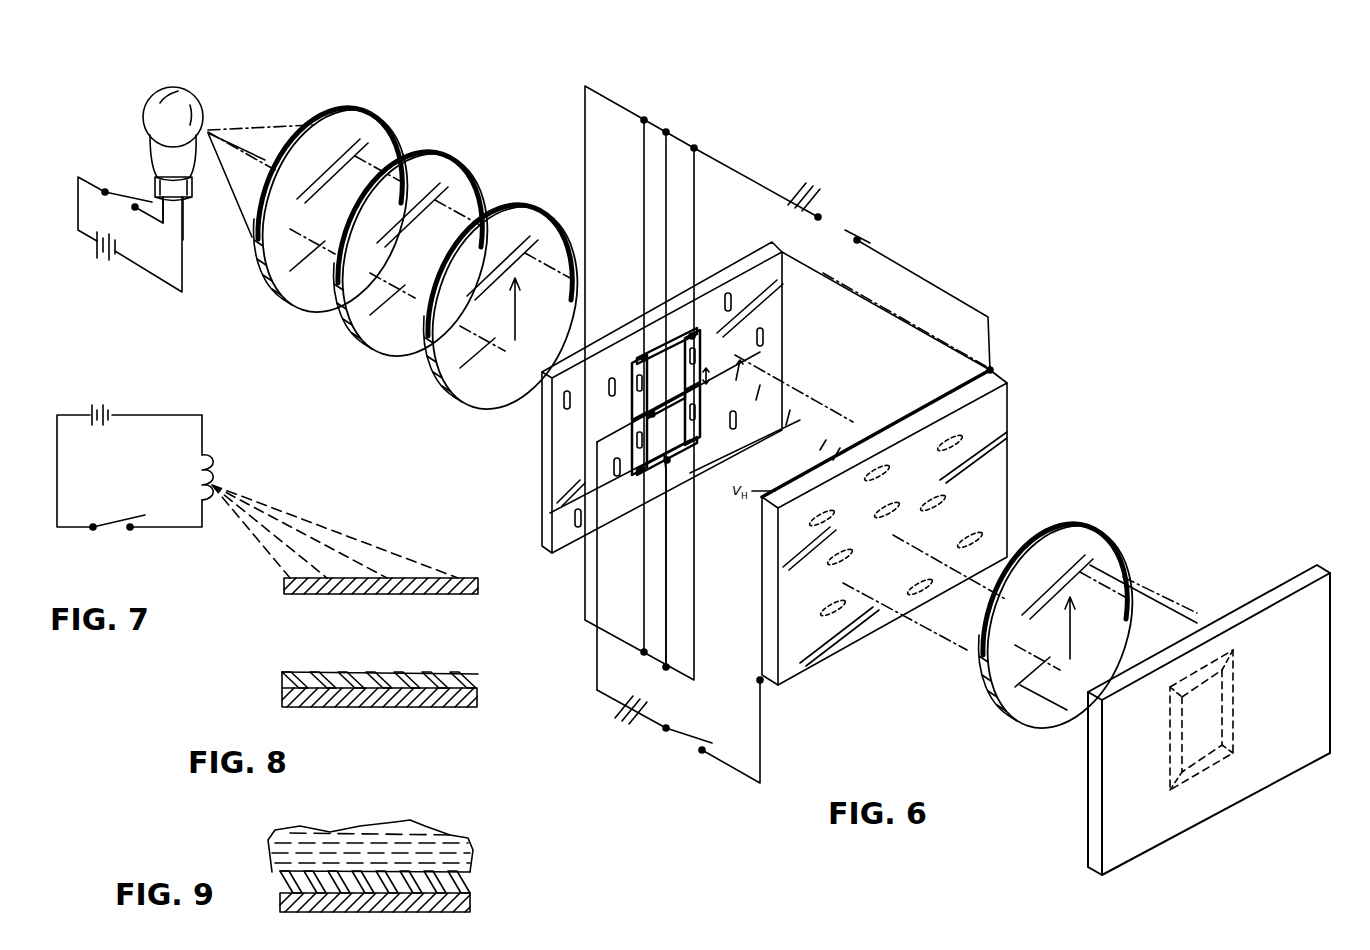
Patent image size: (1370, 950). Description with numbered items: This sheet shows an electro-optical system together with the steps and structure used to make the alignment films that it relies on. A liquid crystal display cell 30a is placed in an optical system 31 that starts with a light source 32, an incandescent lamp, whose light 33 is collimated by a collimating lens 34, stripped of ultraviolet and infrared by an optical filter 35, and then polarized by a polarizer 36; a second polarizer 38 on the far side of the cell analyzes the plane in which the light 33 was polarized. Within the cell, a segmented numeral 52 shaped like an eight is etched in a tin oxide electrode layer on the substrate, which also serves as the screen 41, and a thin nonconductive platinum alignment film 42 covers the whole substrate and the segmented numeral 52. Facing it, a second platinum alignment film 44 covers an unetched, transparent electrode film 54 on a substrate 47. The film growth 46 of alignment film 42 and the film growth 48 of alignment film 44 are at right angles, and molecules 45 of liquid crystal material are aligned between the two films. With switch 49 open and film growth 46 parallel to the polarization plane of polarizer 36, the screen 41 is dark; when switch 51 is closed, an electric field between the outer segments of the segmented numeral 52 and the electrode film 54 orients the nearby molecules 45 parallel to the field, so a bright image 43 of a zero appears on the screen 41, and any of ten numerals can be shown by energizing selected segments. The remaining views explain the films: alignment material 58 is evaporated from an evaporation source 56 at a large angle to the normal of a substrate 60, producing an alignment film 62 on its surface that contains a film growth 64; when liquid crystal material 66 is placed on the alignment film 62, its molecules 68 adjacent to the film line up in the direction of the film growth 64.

In FIG. 6, the liquid crystal display cell 30a is at (1017, 357).
In FIG. 6, the optical system 31 is at (325, 353).
In FIG. 6, the light source 32 is at (200, 103).
In FIG. 6, the light 33 is at (233, 127).
In FIG. 6, the collimating lens 34 is at (370, 112).
In FIG. 6, the optical filter 35 is at (460, 158).
In FIG. 6, the polarizer 36 is at (520, 207).
In FIG. 6, the polarizer 38 is at (1078, 528).
In FIG. 6, the screen 41 is at (545, 403).
In FIG. 6, the alignment film 42 is at (612, 405).
In FIG. 6, the image 43 is at (1170, 714).
In FIG. 6, the alignment film 44 is at (833, 612).
In FIG. 6, the molecules of liquid crystal material 45 is at (768, 407).
In FIG. 6, the film growth 46 is at (572, 517).
In FIG. 6, the substrate 47 is at (1007, 381).
In FIG. 6, the film growth 48 is at (993, 487).
In FIG. 6, the switch 49 is at (692, 735).
In FIG. 6, the switch 51 is at (840, 225).
In FIG. 6, the segmented numeral 52 is at (635, 420).
In FIG. 6, the electrode film 54 is at (943, 400).
In FIG. 7, the evaporation source 56 is at (207, 465).
In FIG. 7, the alignment material 58 is at (287, 515).
In FIG. 7, the substrate 60 is at (284, 582).
In FIG. 8, the substrate 60 is at (292, 705).
In FIG. 8, the alignment film 62 is at (282, 685).
In FIG. 9, the alignment film 62 is at (470, 890).
In FIG. 8, the film growth 64 is at (330, 674).
In FIG. 9, the film growth 64 is at (455, 878).
In FIG. 9, the liquid crystal material 66 is at (410, 828).
In FIG. 9, the molecules 68 is at (333, 842).